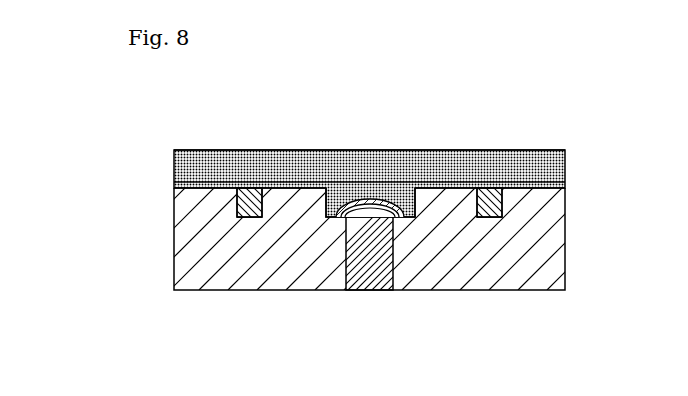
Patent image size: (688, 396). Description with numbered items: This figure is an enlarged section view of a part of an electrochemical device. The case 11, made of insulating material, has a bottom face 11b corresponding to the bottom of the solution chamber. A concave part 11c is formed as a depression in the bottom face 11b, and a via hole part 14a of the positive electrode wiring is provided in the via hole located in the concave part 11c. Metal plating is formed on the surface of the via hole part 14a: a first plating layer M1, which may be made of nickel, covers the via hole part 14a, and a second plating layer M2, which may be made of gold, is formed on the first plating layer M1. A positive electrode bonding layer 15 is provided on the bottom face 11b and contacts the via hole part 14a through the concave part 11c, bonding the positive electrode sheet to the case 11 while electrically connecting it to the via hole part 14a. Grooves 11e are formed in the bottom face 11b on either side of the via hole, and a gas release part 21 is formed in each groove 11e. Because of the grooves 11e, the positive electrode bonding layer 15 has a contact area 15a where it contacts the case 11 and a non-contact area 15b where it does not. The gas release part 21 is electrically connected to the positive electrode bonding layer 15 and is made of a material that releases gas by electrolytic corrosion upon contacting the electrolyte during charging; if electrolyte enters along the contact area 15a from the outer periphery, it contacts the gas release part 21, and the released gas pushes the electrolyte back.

The case 11 is at (566, 259).
The bottom face 11b is at (540, 190).
The concave part 11c is at (422, 212).
The groove 11e is at (253, 218).
The via hole part 14a is at (372, 290).
The positive electrode bonding layer 15 is at (394, 153).
The contact area 15a is at (210, 180).
The non-contact area 15b is at (255, 182).
The gas release part 21 is at (237, 207).
The first plating layer M1 is at (359, 204).
The second plating layer M2 is at (385, 199).